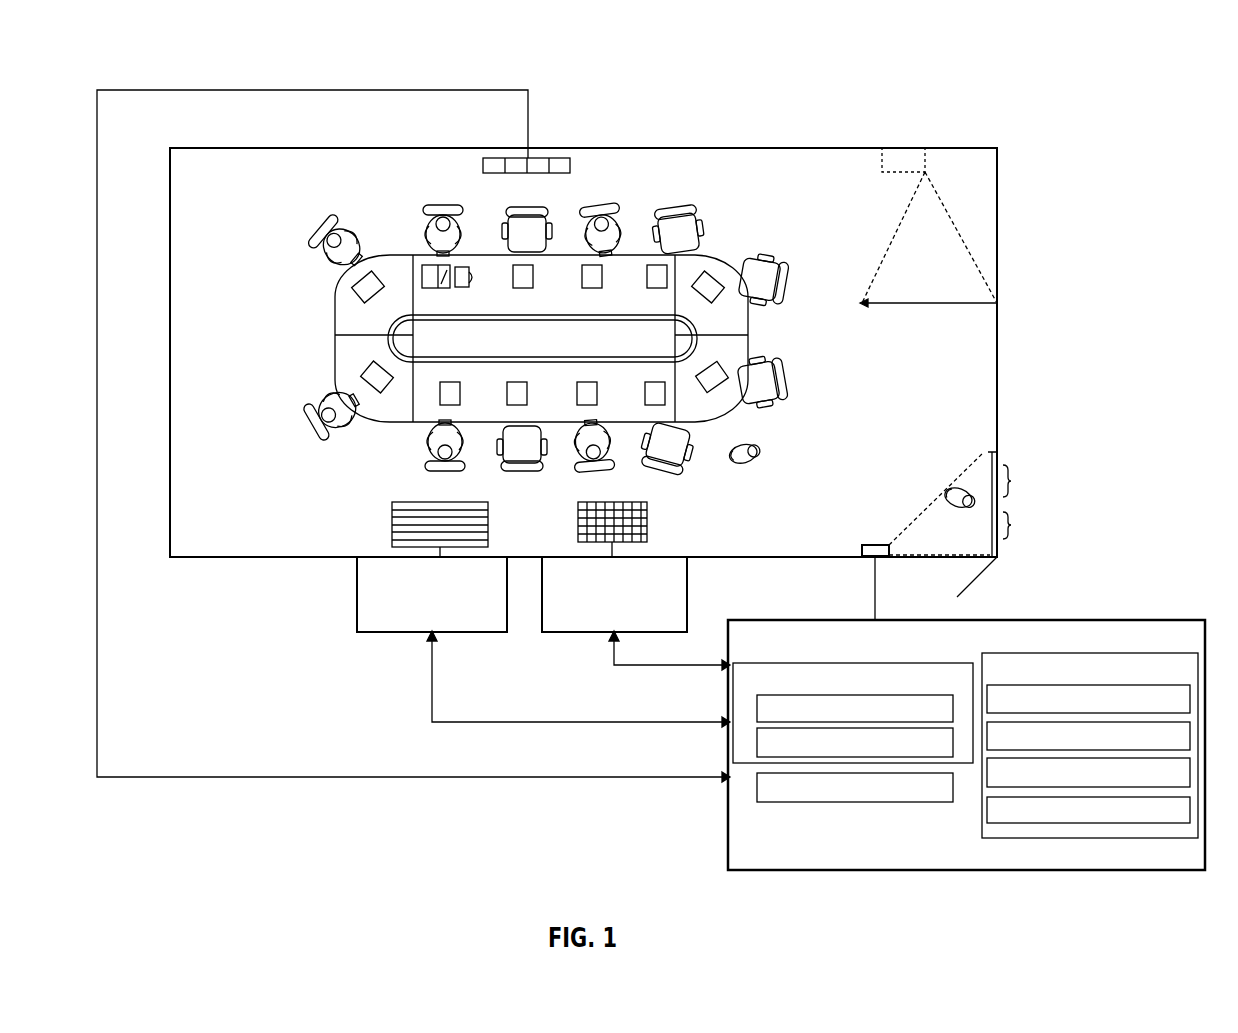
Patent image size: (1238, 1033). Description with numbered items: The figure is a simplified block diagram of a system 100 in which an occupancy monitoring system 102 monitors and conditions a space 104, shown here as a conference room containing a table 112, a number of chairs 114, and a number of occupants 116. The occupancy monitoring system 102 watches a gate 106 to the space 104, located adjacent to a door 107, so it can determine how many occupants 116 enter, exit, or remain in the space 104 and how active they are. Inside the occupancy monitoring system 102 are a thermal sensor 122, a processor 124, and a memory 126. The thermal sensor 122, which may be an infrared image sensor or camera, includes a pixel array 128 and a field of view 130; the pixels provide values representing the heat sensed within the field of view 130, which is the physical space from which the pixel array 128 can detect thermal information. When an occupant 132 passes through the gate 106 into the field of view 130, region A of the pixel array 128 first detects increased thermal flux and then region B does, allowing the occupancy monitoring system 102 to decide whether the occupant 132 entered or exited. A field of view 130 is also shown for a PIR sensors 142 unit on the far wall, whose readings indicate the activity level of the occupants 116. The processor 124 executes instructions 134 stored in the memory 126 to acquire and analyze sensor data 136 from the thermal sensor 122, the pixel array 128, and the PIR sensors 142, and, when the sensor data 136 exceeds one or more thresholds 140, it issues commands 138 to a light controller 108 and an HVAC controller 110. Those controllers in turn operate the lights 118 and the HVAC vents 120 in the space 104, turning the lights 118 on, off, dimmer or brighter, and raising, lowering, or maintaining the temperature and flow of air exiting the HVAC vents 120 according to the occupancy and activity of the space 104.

The system 100 is at (1102, 60).
The occupancy monitoring system 102 is at (882, 163).
The space 104 is at (260, 483).
The gate 106 is at (954, 565).
The door 107 is at (982, 578).
The light controller 108 is at (356, 590).
The HVAC controller 110 is at (690, 583).
The table 112 is at (346, 322).
The chairs 114 is at (788, 395).
The occupants 116 is at (773, 452).
The lights 118 is at (390, 526).
The HVAC vents 120 is at (650, 518).
The thermal sensor 122 is at (853, 713).
The processor 124 is at (855, 787).
The memory 126 is at (1090, 745).
The pixel array 128 is at (855, 707).
The field of view 130 is at (903, 305).
The occupant 132 is at (962, 490).
The instructions 134 is at (1088, 699).
The sensor data 136 is at (1088, 736).
The commands 138 is at (1088, 772).
The thresholds 140 is at (1088, 810).
The PIR sensors 142 is at (567, 132).